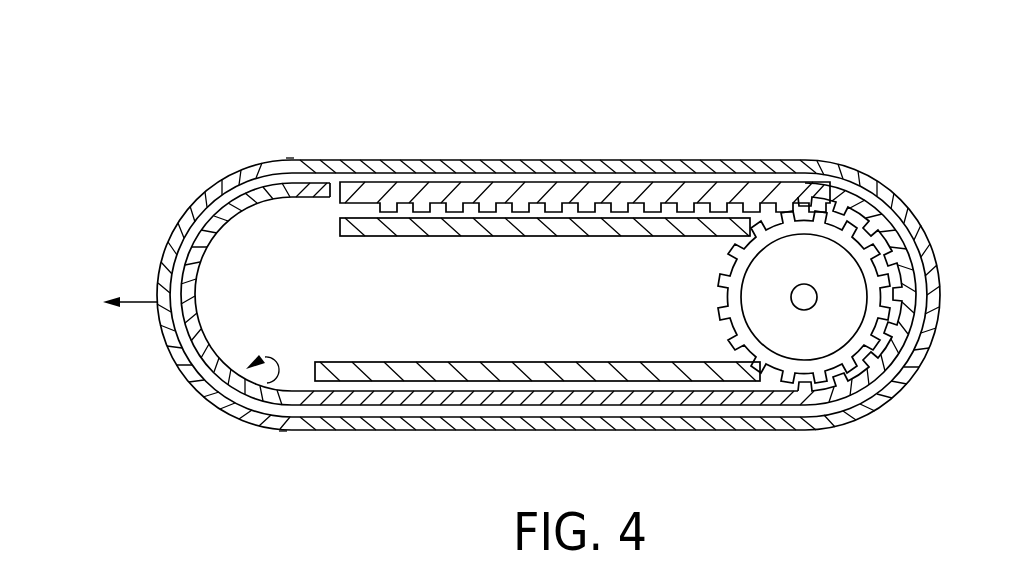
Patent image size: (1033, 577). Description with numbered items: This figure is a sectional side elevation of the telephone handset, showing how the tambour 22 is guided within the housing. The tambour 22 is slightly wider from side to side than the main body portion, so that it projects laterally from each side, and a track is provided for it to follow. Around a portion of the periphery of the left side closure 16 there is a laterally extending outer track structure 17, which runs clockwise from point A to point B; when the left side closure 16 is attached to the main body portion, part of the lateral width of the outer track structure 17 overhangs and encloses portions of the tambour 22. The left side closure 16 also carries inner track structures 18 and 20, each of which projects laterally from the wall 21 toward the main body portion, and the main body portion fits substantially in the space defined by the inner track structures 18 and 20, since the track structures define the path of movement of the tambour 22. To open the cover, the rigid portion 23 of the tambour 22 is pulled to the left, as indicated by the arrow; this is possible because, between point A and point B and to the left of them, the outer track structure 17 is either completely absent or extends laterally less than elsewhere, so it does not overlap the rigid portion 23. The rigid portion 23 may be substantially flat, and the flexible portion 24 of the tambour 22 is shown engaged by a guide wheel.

The left side closure 16 is at (505, 271).
The outer track structure 17 is at (548, 276).
The inner track structure 18 is at (440, 228).
The inner track structure 20 is at (432, 367).
The wall 21 is at (547, 310).
The tambour 22 is at (242, 405).
The rigid portion of tambour 23 is at (404, 397).
The flexible portion of tambour 24 is at (418, 192).
The point A is at (290, 160).
The point B is at (283, 430).